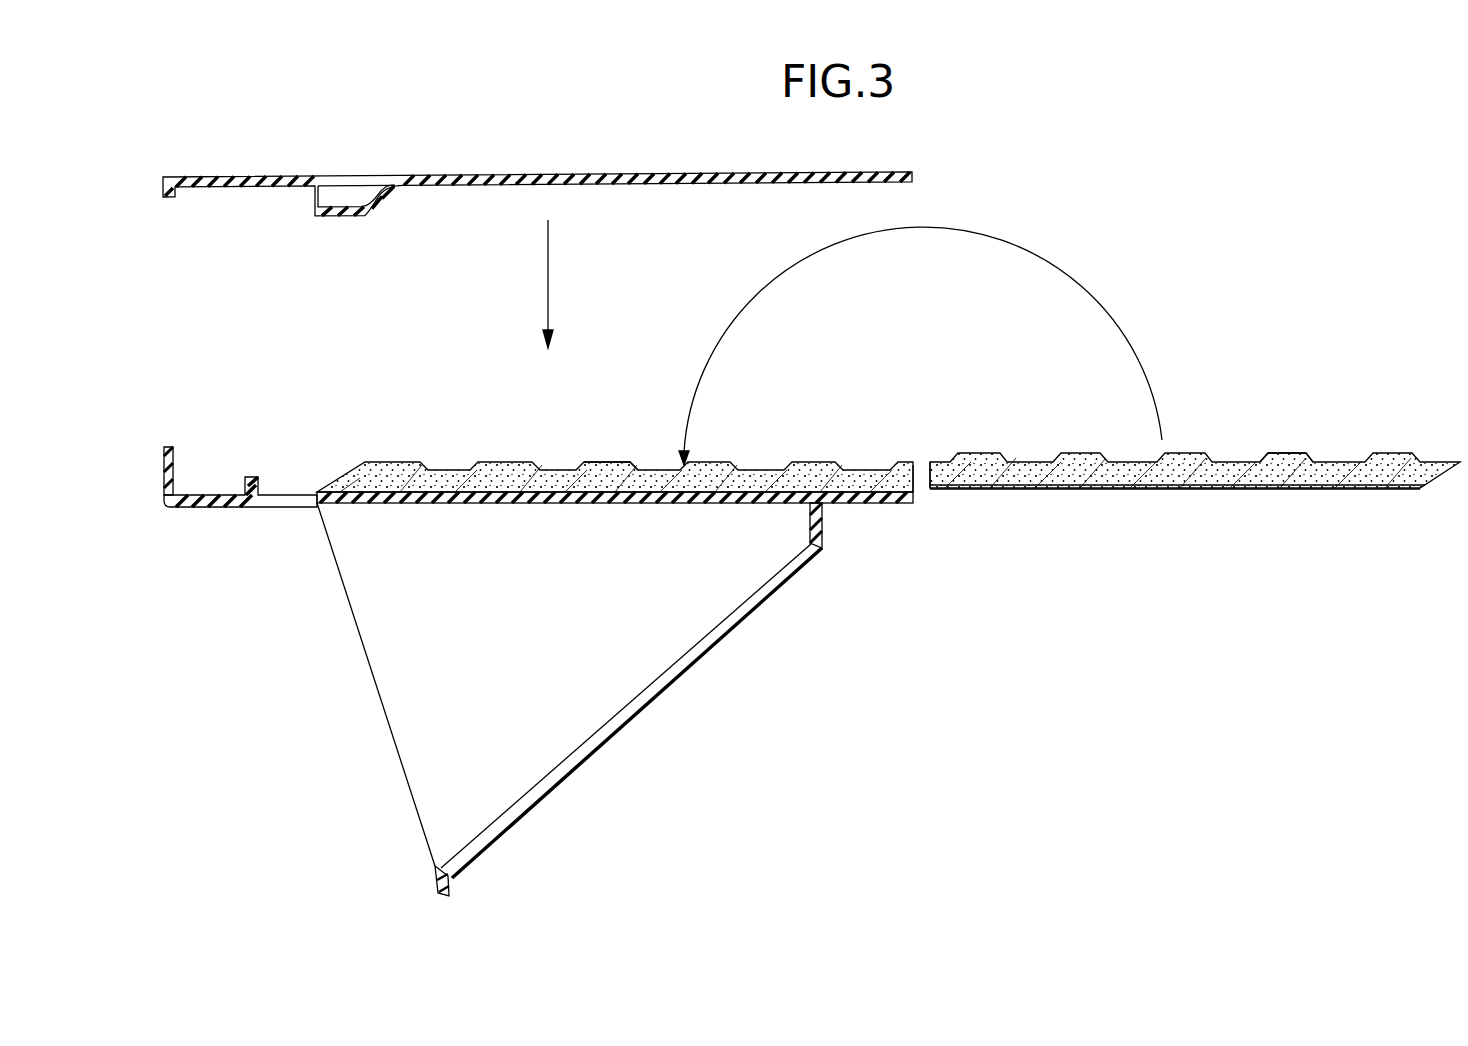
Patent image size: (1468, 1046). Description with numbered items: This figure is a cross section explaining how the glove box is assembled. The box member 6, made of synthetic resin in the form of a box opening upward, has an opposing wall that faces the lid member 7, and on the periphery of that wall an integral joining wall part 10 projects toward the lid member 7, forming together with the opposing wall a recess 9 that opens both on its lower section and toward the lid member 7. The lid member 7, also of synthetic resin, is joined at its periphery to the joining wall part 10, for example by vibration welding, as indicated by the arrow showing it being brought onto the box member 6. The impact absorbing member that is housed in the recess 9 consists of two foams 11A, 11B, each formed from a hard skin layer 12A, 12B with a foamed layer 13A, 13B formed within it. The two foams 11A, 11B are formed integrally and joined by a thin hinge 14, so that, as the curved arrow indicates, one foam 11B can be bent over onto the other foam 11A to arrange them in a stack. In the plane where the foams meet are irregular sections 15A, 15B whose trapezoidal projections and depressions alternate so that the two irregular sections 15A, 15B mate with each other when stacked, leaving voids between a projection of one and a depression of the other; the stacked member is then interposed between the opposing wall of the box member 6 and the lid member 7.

The lid member 7 is at (690, 172).
The joining wall part 10 is at (170, 460).
The recess 9 is at (173, 480).
The foam 11A is at (615, 554).
The skin layer 12A is at (541, 574).
The foamed layer 13A is at (570, 505).
The irregular section 15A is at (594, 468).
The foam 11B is at (1195, 549).
The skin layer 12B is at (985, 572).
The foamed layer 13B is at (1013, 490).
The irregular section 15B is at (1280, 455).
The thin hinge 14 is at (918, 465).
The box member 6 is at (725, 627).